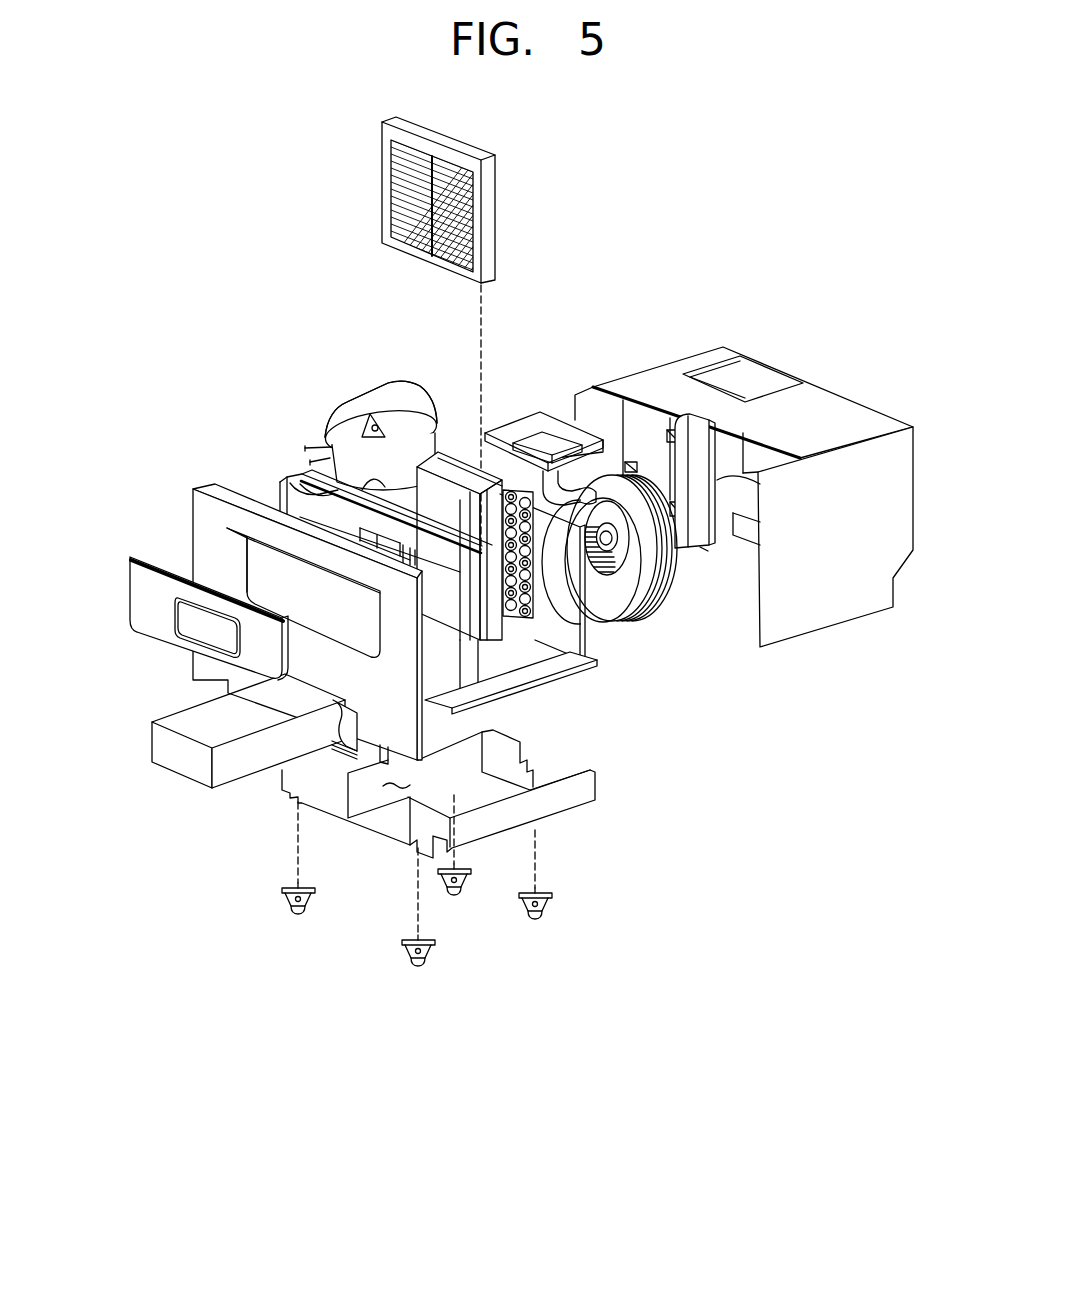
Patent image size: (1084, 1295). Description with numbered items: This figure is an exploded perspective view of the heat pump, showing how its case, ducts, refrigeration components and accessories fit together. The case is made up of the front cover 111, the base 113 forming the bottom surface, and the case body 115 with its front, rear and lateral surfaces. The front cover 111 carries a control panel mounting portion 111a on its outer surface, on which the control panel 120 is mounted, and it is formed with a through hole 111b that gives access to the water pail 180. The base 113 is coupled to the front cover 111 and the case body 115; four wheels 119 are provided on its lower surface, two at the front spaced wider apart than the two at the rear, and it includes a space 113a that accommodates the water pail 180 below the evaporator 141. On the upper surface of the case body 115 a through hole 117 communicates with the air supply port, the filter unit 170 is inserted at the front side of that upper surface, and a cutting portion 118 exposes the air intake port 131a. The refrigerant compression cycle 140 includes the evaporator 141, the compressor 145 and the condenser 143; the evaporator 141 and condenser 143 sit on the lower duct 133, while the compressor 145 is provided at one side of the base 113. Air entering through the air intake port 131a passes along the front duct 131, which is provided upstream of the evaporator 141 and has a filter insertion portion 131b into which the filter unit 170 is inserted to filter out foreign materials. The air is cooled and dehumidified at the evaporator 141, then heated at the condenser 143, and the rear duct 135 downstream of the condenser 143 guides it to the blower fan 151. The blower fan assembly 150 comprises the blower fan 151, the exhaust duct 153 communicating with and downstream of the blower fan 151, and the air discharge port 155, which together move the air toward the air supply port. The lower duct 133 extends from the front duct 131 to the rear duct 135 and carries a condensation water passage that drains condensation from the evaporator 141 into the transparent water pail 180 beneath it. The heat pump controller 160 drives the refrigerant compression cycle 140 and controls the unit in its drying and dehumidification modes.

The filter unit 170 is at (455, 148).
The refrigerant compression cycle 140 is at (401, 454).
The evaporator 141 is at (430, 497).
The compressor 145 is at (410, 398).
The condenser 143 is at (462, 455).
The front duct 131 is at (439, 545).
The air intake port 131a is at (297, 478).
The filter insertion portion 131b is at (485, 548).
The lower duct 133 is at (562, 663).
The rear duct 135 is at (598, 648).
The blower fan assembly 150 is at (652, 561).
The blower fan 151 is at (633, 615).
The exhaust duct 153 is at (538, 430).
The air discharge port 155 is at (546, 414).
The heat pump controller 160 is at (645, 430).
The case body 115 is at (744, 478).
The through hole 117 is at (732, 384).
The cutting portion 118 is at (723, 457).
The front cover 111 is at (264, 583).
The control panel mounting portion 111a is at (277, 562).
The through hole 111b is at (337, 748).
The control panel 120 is at (137, 603).
The water pail 180 is at (150, 721).
The base 113 is at (467, 818).
The space 113a is at (397, 790).
The wheels 119 is at (298, 914).